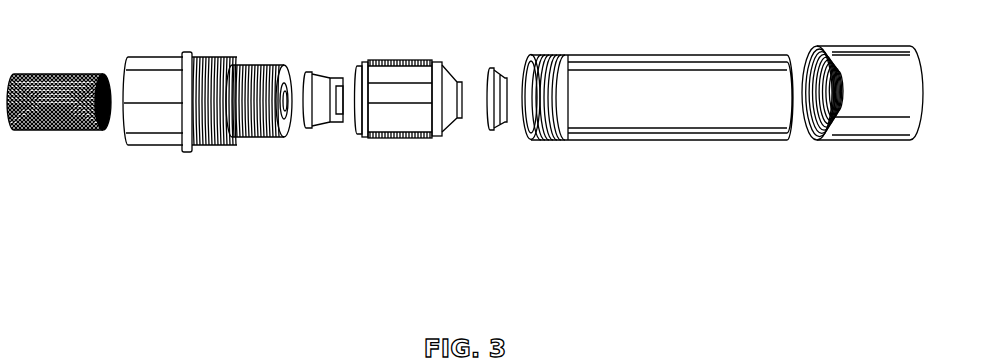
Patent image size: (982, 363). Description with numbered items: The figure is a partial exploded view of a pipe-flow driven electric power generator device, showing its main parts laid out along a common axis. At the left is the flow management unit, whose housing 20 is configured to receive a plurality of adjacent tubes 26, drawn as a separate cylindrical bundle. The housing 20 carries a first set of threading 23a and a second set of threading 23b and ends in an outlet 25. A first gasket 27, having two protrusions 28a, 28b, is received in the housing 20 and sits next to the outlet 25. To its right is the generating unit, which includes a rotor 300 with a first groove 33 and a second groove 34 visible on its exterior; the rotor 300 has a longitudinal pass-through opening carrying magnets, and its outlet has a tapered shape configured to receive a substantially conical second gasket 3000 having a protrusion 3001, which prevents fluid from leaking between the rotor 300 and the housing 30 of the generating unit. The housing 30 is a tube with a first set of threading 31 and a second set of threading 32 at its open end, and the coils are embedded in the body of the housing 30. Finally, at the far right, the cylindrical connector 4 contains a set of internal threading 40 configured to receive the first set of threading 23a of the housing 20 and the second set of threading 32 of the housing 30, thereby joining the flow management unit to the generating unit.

The adjacent tubes 26 is at (63, 127).
The housing 20 is at (160, 138).
The first set of threading 23a is at (212, 140).
The second set of threading 23b is at (260, 132).
The outlet 25 is at (285, 117).
The first gasket 27 is at (325, 117).
The protrusion 28a is at (310, 70).
The protrusion 28b is at (333, 76).
The first groove 33 is at (366, 64).
The second groove 34 is at (438, 62).
The rotor 300 is at (397, 118).
The second gasket 3000 is at (492, 130).
The protrusion 3001 is at (502, 72).
The housing 30 is at (718, 117).
The first set of threading 31 is at (523, 107).
The second set of threading 32 is at (550, 134).
The internal threading 40 is at (815, 140).
The connector 4 is at (868, 122).